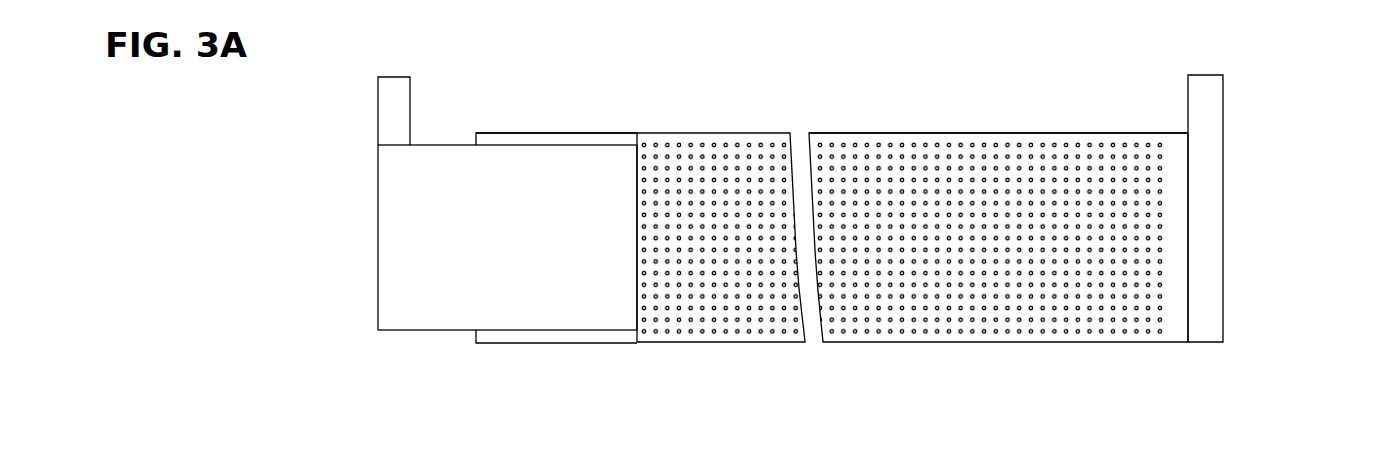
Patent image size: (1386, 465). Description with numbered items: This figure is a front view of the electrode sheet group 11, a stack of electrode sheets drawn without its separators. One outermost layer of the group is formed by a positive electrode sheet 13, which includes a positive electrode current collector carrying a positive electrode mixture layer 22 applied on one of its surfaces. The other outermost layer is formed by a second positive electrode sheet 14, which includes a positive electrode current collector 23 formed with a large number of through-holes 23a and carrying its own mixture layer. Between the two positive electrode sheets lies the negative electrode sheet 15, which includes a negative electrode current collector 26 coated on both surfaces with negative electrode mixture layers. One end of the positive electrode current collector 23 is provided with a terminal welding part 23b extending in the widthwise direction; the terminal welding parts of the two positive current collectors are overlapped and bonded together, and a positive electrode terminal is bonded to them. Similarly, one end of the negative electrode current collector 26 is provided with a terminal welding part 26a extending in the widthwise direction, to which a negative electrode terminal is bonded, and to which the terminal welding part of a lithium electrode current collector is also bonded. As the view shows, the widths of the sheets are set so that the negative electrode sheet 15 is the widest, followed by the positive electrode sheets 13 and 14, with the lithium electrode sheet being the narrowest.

The electrode sheet group 11 is at (820, 231).
The positive electrode sheet 13 is at (540, 123).
The positive electrode sheet 14 is at (458, 218).
The negative electrode sheet 15 is at (1101, 120).
The positive electrode mixture layer 22 is at (594, 133).
The positive electrode current collector 23 is at (966, 231).
The through-holes 23a is at (890, 155).
The terminal welding part 23b is at (1207, 120).
The negative electrode current collector 26 is at (435, 282).
The terminal welding part 26a is at (393, 120).